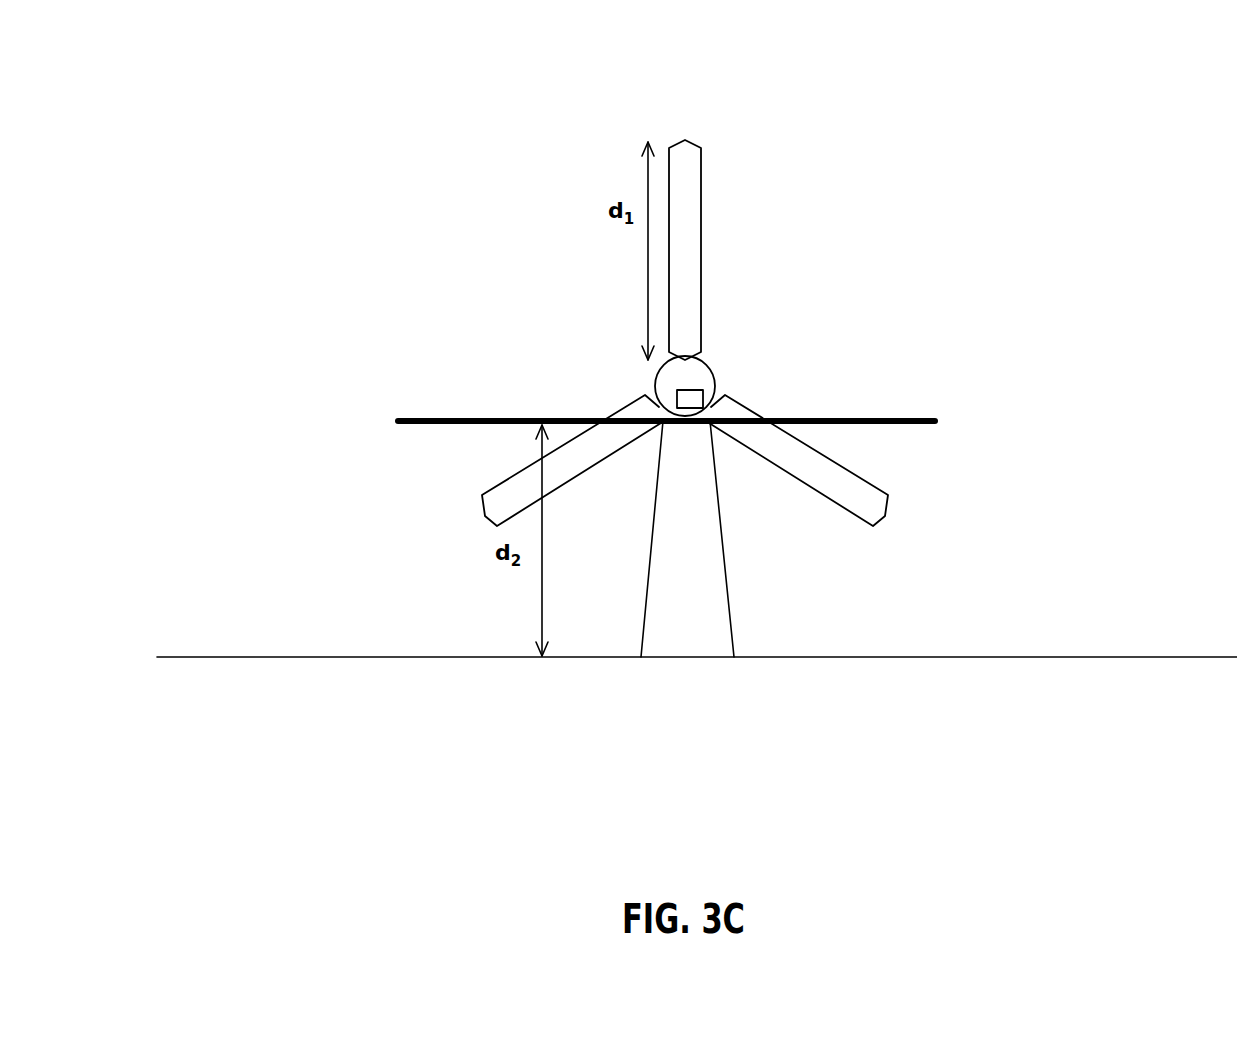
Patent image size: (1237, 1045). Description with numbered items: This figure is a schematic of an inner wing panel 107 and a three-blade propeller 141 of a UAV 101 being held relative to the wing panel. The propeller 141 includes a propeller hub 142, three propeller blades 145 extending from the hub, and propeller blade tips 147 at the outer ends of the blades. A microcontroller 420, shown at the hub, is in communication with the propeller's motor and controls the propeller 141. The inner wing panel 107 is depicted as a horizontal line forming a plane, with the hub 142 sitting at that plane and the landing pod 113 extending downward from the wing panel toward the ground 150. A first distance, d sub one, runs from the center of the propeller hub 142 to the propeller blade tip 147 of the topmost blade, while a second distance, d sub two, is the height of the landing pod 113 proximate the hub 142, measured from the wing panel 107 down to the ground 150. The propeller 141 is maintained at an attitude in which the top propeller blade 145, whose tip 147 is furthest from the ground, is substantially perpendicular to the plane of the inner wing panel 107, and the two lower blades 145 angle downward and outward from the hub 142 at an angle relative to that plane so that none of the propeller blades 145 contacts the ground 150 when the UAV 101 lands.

The UAV 101 is at (1054, 98).
The inner wing panel 107 is at (408, 419).
The landing pod 113 is at (724, 557).
The three-blade propeller 141 is at (626, 306).
The propeller hub 142 is at (706, 367).
The propeller blade 145 is at (688, 199).
The propeller blade tip 147 is at (886, 500).
The ground 150 is at (457, 658).
The microcontroller 420 is at (705, 406).